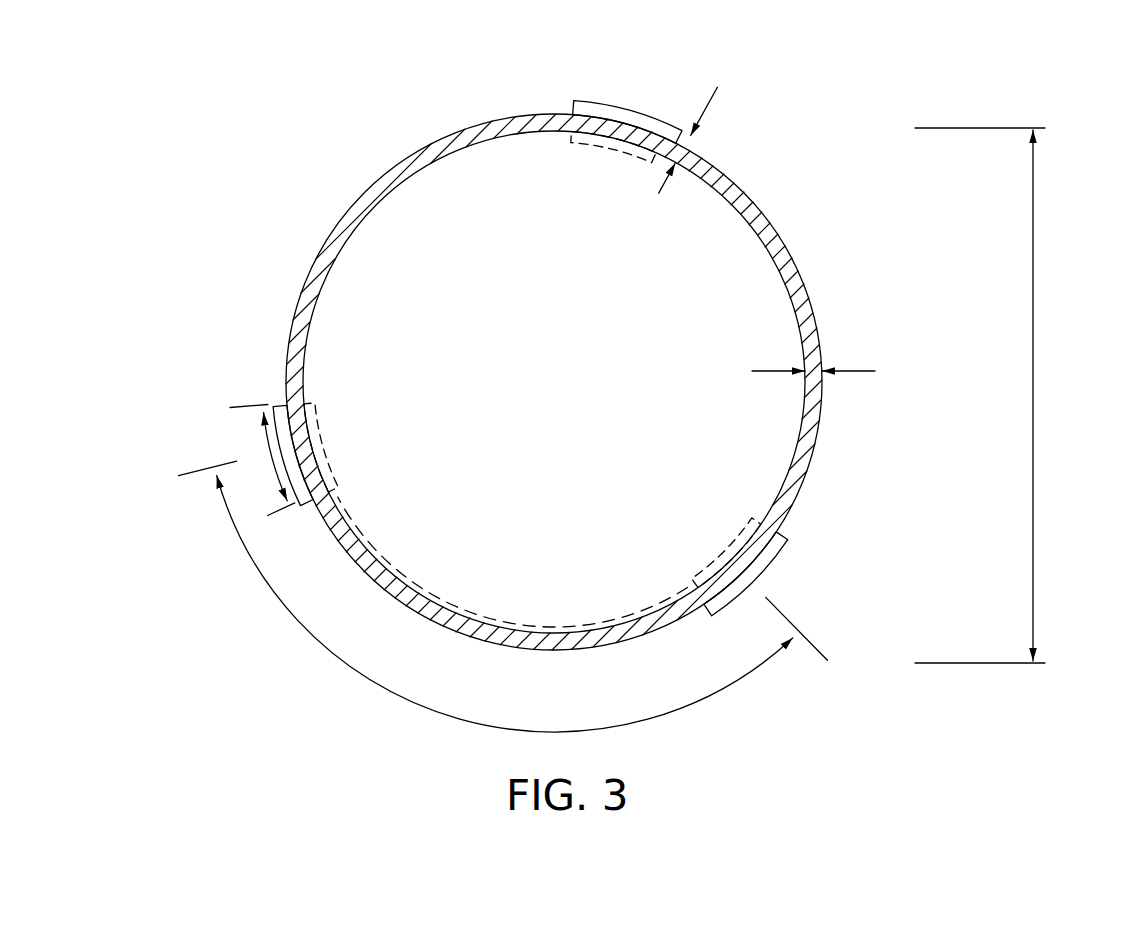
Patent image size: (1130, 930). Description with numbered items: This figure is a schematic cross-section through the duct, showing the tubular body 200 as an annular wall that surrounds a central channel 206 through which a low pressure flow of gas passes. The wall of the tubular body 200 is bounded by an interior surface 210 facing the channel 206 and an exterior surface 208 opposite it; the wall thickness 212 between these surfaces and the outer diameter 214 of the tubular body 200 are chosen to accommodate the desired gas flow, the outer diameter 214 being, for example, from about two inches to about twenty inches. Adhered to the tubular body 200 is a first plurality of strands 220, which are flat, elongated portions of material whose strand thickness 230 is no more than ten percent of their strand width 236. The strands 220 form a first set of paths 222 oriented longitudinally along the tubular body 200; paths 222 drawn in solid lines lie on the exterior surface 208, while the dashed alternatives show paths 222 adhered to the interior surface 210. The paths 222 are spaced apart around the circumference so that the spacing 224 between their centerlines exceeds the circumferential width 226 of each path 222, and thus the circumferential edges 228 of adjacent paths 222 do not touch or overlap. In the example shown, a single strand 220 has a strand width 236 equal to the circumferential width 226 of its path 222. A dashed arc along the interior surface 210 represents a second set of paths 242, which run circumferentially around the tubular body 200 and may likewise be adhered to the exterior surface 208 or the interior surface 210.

The tubular body 200 is at (872, 270).
The channel 206 is at (580, 394).
The exterior surface 208 is at (348, 213).
The interior surface 210 is at (348, 238).
The wall thickness 212 is at (826, 372).
The outer diameter 214 is at (1040, 375).
The first plurality of strands 220 is at (557, 329).
The first set of paths 222 is at (586, 99).
The spacing 224 is at (286, 602).
The circumferential width 226 is at (186, 459).
The circumferential edges 228 is at (309, 512).
The strand thickness 230 is at (690, 142).
The strand width 236 is at (266, 447).
The second set of paths 242 is at (548, 622).